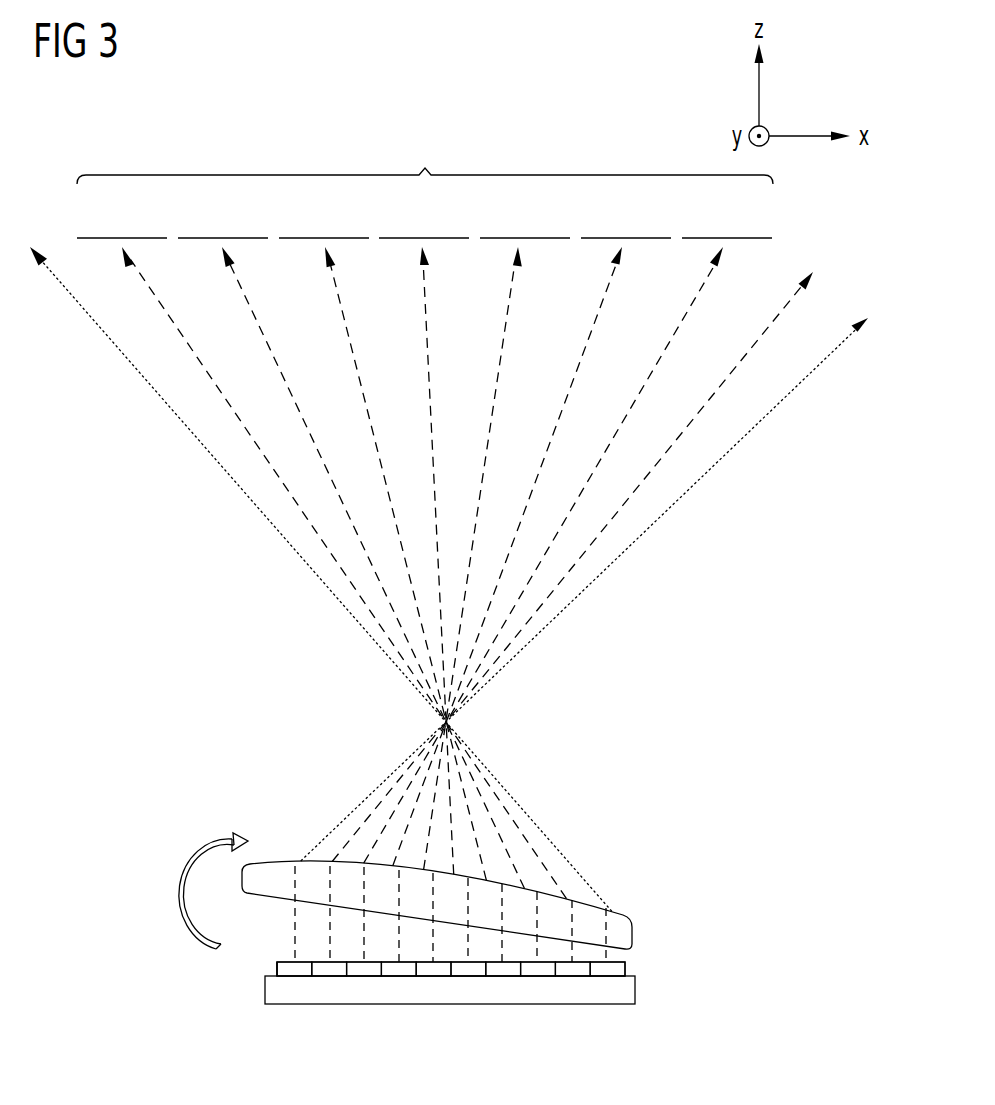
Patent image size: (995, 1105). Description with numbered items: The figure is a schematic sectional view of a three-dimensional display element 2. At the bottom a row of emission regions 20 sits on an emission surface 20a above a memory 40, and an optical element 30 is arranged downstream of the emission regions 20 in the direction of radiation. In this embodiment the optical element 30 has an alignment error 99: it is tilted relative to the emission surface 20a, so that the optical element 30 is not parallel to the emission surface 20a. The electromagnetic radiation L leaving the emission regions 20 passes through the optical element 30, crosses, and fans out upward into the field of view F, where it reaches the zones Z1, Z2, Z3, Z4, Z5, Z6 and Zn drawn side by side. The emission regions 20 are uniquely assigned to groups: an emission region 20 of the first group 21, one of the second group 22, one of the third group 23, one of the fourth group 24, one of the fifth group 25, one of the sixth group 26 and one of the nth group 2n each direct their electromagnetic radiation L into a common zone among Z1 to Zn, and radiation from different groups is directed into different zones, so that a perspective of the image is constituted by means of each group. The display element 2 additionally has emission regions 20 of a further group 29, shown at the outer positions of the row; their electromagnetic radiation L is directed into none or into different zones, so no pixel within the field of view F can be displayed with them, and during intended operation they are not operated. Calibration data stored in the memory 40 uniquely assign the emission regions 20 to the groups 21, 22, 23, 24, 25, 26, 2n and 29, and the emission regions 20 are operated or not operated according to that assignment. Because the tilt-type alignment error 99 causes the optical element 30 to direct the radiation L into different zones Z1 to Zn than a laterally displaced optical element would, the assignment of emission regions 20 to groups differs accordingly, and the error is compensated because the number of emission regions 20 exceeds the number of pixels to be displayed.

The 3D display element 2 is at (707, 912).
The emission region 20 is at (616, 972).
The emission surface 20a is at (288, 961).
The first group 21 is at (573, 970).
The second group 22 is at (538, 970).
The third group 23 is at (503, 970).
The fourth group 24 is at (468, 970).
The fifth group 25 is at (434, 970).
The sixth group 26 is at (399, 970).
The nth group 2n is at (364, 970).
The further group 29 is at (294, 970).
The optical element 30 is at (622, 942).
The memory 40 is at (627, 985).
The alignment error 99 is at (197, 855).
The electromagnetic radiation L is at (673, 337).
The field of view F is at (425, 159).
The zone Z1 is at (122, 221).
The zone Z2 is at (223, 221).
The zone Z3 is at (324, 221).
The zone Z4 is at (424, 221).
The zone Z5 is at (525, 221).
The zone Z6 is at (626, 221).
The zone Zn is at (727, 221).